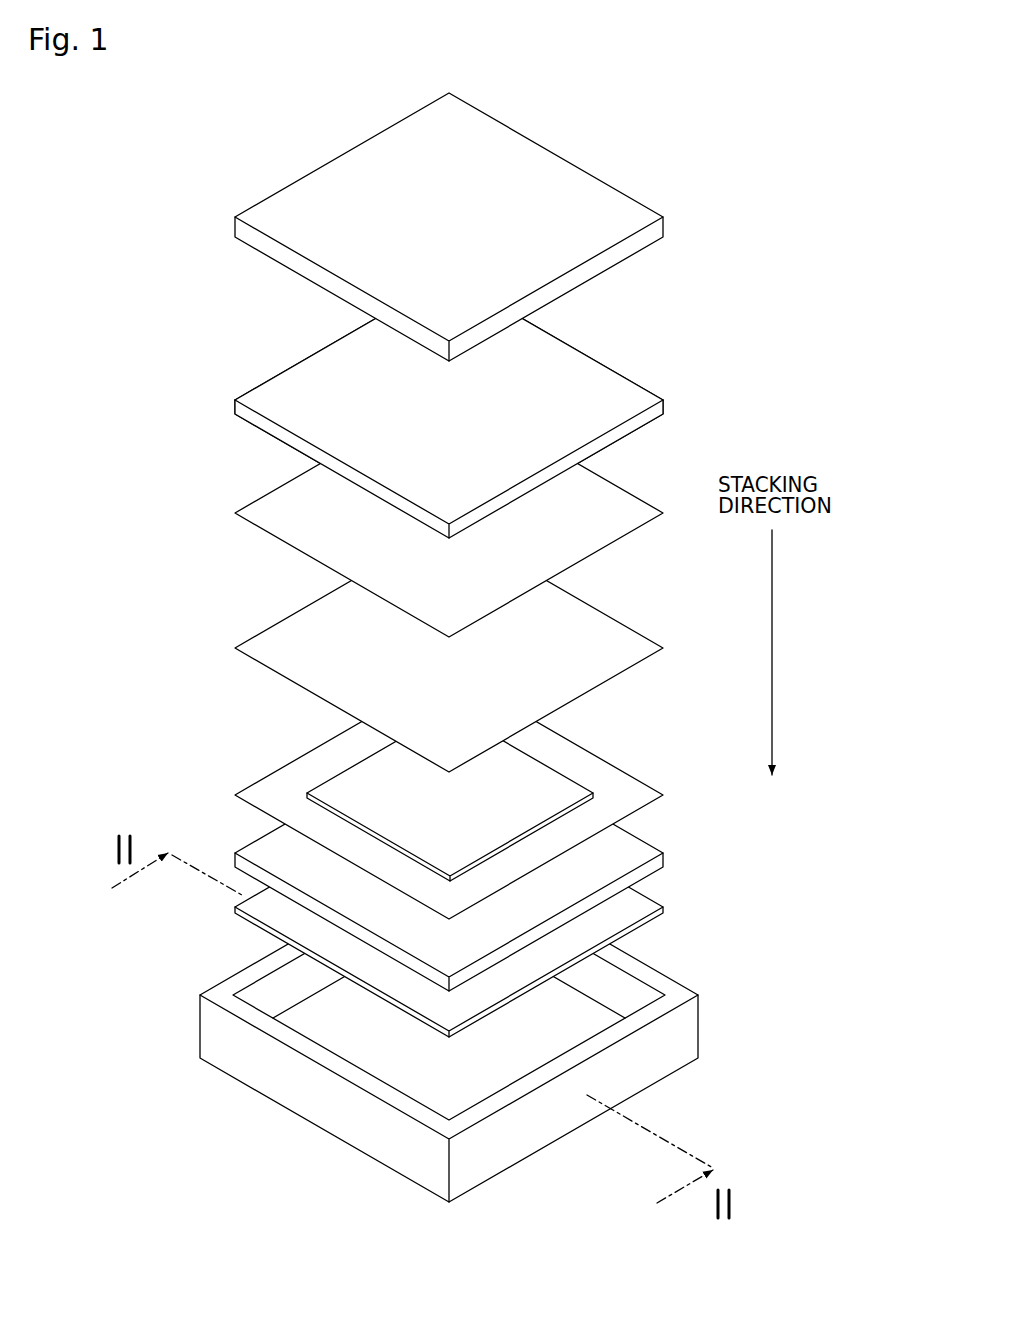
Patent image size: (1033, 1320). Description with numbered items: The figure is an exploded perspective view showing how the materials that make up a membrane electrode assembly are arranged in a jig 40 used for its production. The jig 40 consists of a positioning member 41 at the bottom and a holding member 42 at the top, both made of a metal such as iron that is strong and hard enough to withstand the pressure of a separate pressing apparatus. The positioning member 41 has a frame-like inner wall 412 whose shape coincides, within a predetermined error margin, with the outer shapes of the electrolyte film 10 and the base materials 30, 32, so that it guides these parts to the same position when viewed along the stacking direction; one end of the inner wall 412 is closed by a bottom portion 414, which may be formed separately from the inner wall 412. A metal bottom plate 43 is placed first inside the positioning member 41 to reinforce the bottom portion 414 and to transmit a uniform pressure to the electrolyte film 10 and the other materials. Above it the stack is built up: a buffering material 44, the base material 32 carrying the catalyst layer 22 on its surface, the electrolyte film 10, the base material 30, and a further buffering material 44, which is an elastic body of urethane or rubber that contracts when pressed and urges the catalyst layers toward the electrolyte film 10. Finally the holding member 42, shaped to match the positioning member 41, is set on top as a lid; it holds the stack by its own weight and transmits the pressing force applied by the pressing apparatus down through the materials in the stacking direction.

The electrolyte film 10 is at (640, 650).
The catalyst layer 22 is at (577, 770).
The base material 30 is at (640, 512).
The base material 32 is at (642, 792).
The jig 40 is at (172, 178).
The positioning member 41 is at (468, 1026).
The inner wall 412 is at (620, 993).
The bottom portion 414 is at (313, 1012).
The holding member 42 is at (638, 216).
The metal bottom plate 43 is at (640, 905).
The buffering material 44 is at (640, 850).